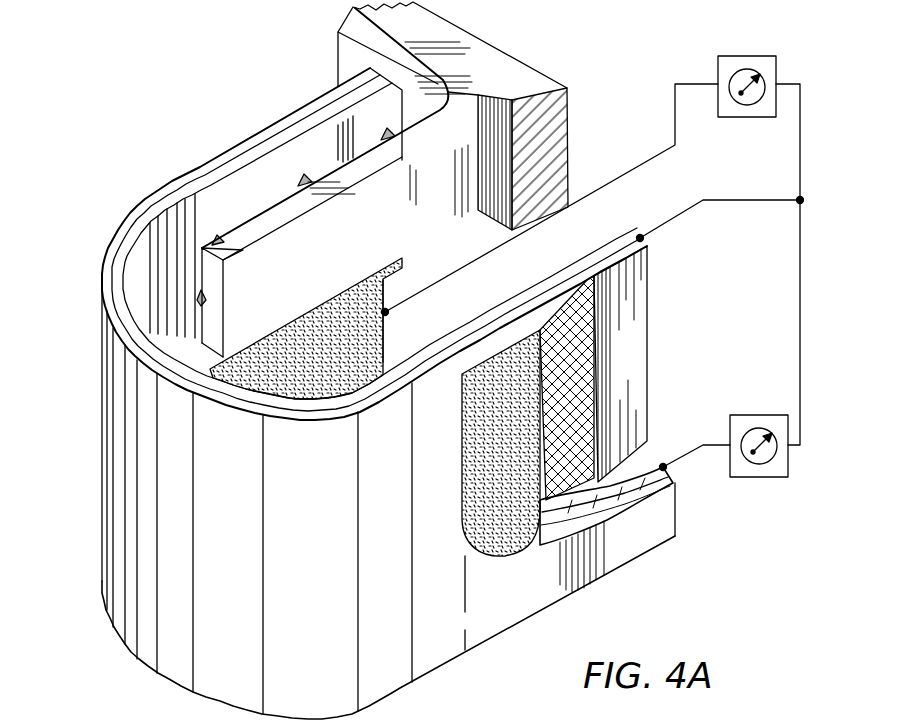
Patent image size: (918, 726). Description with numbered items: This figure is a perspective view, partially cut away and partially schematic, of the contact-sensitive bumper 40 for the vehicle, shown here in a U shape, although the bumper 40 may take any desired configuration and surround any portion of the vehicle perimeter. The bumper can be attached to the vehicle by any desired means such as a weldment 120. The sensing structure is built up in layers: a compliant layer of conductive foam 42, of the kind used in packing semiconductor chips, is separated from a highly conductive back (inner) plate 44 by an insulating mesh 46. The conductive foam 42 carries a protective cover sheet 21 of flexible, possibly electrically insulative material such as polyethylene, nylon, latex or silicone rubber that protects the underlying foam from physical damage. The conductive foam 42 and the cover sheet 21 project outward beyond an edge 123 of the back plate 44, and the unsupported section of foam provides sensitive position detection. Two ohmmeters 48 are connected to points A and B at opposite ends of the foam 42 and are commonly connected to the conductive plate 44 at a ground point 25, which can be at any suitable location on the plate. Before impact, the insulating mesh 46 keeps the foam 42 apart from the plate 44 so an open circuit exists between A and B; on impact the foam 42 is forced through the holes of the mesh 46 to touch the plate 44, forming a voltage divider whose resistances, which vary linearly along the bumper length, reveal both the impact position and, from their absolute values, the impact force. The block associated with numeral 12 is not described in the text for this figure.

The core block 12 is at (516, 72).
The protective cover sheet 21 is at (162, 507).
The ground point 25 is at (593, 277).
The bumper 40 is at (230, 91).
The conductive foam 42 is at (513, 345).
The conductive plate 44 is at (624, 355).
The insulating mesh 46 is at (583, 283).
The ohmmeters 48 is at (755, 415).
The weldment 120 is at (290, 207).
The edge 123 is at (647, 447).